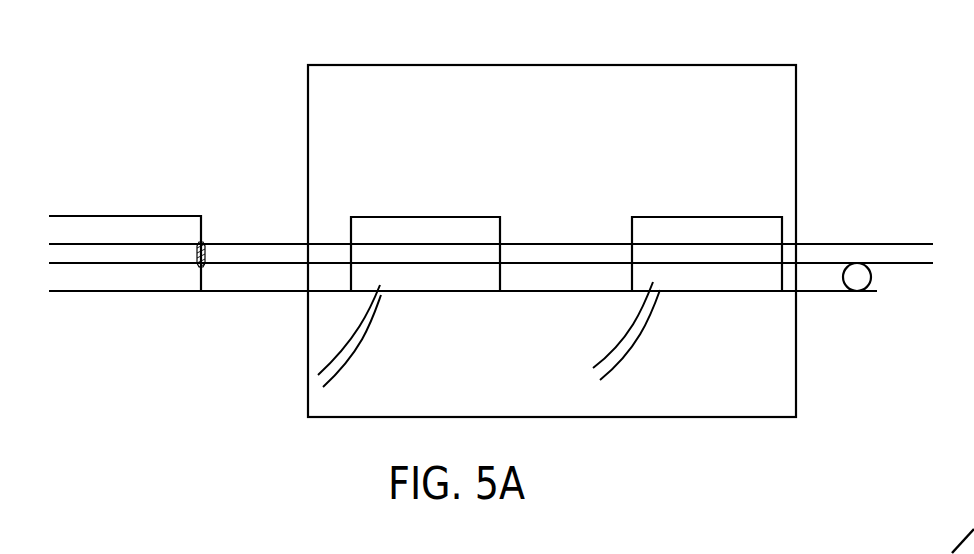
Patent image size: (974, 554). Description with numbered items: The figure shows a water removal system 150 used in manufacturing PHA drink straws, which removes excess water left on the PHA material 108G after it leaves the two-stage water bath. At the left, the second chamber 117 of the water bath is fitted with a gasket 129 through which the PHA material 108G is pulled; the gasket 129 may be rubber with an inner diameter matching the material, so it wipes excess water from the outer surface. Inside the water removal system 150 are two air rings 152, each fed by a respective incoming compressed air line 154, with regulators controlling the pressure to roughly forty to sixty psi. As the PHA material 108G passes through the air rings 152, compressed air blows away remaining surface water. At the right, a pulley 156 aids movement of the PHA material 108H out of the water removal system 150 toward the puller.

The water removal system 150 is at (332, 93).
The second chamber 117 is at (147, 215).
The PHA material 108G is at (292, 253).
The PHA material 108H is at (848, 242).
The gasket 129 is at (207, 252).
The air ring 152 is at (443, 215).
The compressed air line 154 is at (375, 310).
The pulley 156 is at (860, 282).